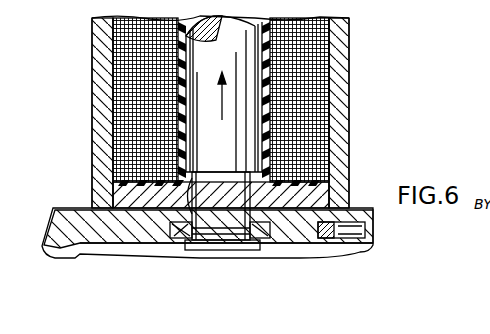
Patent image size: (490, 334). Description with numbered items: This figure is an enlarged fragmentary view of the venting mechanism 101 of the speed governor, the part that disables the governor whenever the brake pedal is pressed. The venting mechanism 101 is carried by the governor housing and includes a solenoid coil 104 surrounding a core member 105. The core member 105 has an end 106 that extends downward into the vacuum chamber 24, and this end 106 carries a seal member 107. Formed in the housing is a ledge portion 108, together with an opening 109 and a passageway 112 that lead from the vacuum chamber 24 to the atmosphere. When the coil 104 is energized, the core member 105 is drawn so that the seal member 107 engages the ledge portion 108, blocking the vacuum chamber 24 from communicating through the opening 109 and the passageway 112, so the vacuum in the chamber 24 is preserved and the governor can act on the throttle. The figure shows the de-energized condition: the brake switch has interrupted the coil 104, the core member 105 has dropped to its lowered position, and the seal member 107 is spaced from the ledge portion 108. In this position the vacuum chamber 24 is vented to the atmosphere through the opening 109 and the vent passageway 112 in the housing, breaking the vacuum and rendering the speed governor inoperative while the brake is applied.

The venting mechanism 101 is at (357, 57).
The solenoid coil 104 is at (310, 81).
The core member 105 is at (244, 130).
The end of core member 106 is at (208, 236).
The seal member 107 is at (90, 207).
The ledge portion 108 is at (150, 178).
The opening 109 is at (190, 171).
The vent passageway 112 is at (305, 205).
The vacuum chamber 24 is at (358, 254).